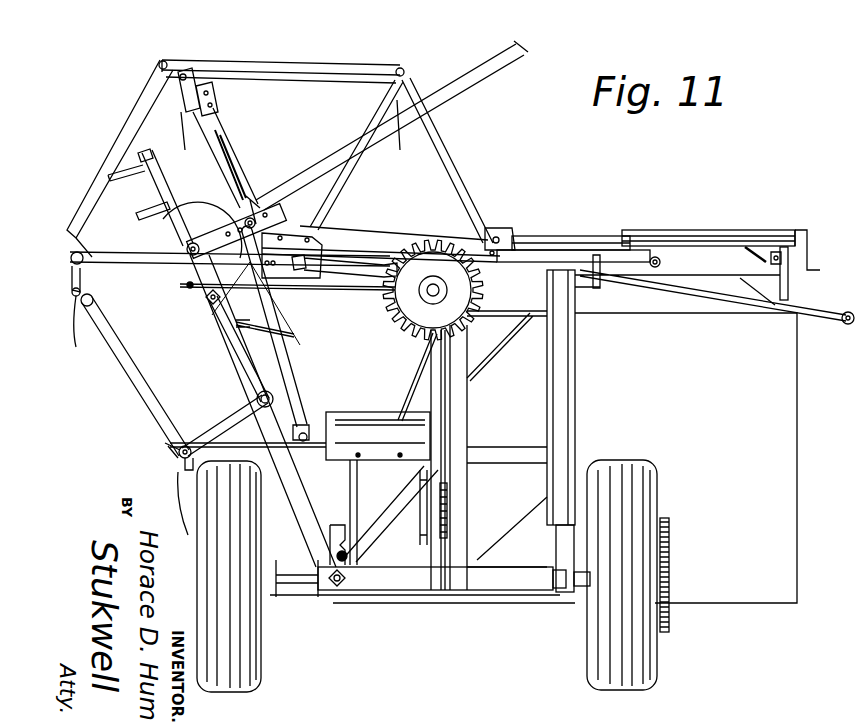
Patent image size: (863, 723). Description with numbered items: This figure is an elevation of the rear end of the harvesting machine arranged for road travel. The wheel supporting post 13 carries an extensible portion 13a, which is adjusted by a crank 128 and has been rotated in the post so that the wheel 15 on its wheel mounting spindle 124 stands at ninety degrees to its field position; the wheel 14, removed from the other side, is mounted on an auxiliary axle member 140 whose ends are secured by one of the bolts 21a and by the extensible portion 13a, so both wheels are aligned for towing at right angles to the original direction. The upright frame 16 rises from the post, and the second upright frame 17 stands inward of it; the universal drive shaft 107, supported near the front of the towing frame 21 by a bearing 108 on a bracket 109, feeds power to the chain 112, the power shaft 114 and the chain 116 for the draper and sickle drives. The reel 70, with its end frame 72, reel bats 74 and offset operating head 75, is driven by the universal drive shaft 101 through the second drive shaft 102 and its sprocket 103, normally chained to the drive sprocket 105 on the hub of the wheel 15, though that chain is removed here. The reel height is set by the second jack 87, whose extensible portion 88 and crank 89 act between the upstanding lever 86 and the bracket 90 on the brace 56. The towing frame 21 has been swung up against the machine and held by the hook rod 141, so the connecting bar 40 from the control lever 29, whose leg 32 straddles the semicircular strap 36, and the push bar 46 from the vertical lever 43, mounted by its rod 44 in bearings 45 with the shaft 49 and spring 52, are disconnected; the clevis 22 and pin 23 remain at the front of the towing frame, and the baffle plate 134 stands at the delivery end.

The harvesting reel 70 is at (353, 47).
The offset operating head 75 is at (232, 62).
The end frame 72 is at (458, 172).
The control lever 29 is at (472, 88).
The pin 23 is at (108, 177).
The clevis 22 is at (163, 172).
The universal drive shaft 107 is at (222, 130).
The bearing 108 is at (224, 207).
The leg 32 is at (250, 198).
The semicircular strap 36 is at (215, 218).
The bracket 109 is at (172, 240).
The hook rod 141 is at (186, 288).
The push bar 46 is at (378, 287).
The reel bat 74 is at (118, 288).
The towing frame 21 is at (212, 322).
The vertical lever 43 is at (240, 348).
The bearing 45 is at (262, 403).
The rod 44 is at (278, 392).
The shaft 49 is at (298, 323).
The universal drive shaft 101 is at (378, 242).
The sprocket 103 is at (446, 242).
The second drive shaft 102 is at (440, 290).
The second upright frame 17 is at (412, 362).
The upright frame 16 is at (463, 422).
The wheel supporting post 13 is at (578, 400).
The baffle plate 134 is at (690, 391).
The upstanding lever 86 is at (496, 230).
The extensible portion 88 is at (580, 234).
The second jack 87 is at (716, 230).
The crank 128 is at (626, 253).
The crank 89 is at (806, 252).
The bracket 90 is at (790, 284).
The brace 56 is at (748, 276).
The connecting bar 40 is at (754, 312).
The wheel 15 is at (645, 486).
The drive sprocket 105 is at (670, 556).
The wheel 14 is at (198, 590).
The spring 52 is at (346, 526).
The chain 112 is at (420, 477).
The chain 116 is at (450, 518).
The power shaft 114 is at (418, 540).
The extensible portion 13a is at (557, 555).
The auxiliary axle member 140 is at (470, 600).
The bolt 21a is at (343, 590).
The wheel mounting spindle 124 is at (572, 598).